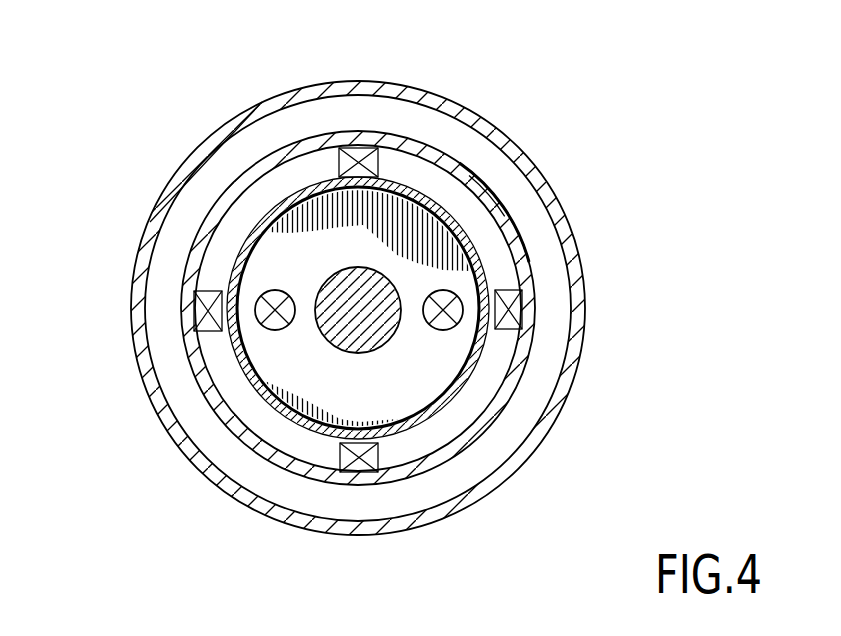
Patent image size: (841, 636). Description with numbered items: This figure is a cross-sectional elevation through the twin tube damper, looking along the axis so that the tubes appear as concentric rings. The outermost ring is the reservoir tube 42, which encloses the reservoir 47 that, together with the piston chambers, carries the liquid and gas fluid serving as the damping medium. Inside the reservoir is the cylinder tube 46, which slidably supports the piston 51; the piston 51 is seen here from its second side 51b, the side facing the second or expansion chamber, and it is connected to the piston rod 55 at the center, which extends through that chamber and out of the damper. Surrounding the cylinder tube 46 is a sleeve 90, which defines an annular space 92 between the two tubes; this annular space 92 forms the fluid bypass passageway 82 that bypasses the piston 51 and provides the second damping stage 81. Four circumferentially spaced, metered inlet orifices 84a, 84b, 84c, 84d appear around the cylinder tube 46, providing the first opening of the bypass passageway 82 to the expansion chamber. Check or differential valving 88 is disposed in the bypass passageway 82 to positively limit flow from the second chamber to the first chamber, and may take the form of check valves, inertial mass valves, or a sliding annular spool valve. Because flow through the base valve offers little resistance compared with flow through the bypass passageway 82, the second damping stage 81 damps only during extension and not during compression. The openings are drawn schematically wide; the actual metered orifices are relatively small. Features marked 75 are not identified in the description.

The reservoir tube 42 is at (207, 147).
The reservoir 47 is at (563, 298).
The fluid bypass passageway 82 is at (455, 202).
The second damping stage 81 is at (527, 200).
The sleeve 90 is at (473, 440).
The annular space 92 is at (430, 443).
The cylinder tube 46 is at (460, 395).
The second side of the piston 51b is at (405, 206).
The metered inlet orifice 84a is at (338, 177).
The metered inlet orifice 84b is at (488, 307).
The metered inlet orifice 84c is at (358, 446).
The metered inlet orifice 84d is at (229, 313).
The check or differential valving 88 is at (363, 181).
The piston 51 is at (391, 392).
The piston rod 55 is at (333, 337).
The fastener holes 75 is at (273, 327).